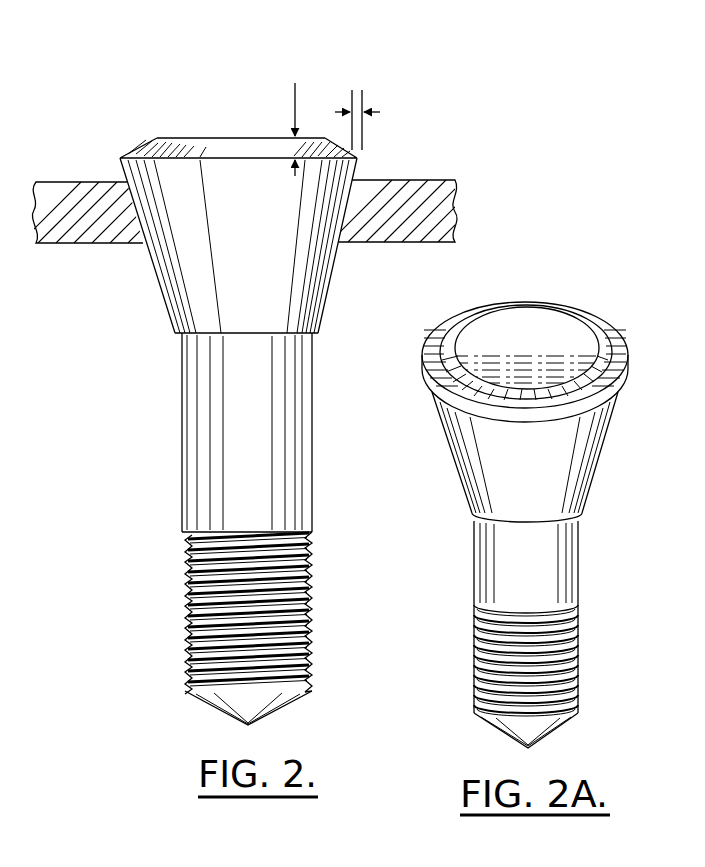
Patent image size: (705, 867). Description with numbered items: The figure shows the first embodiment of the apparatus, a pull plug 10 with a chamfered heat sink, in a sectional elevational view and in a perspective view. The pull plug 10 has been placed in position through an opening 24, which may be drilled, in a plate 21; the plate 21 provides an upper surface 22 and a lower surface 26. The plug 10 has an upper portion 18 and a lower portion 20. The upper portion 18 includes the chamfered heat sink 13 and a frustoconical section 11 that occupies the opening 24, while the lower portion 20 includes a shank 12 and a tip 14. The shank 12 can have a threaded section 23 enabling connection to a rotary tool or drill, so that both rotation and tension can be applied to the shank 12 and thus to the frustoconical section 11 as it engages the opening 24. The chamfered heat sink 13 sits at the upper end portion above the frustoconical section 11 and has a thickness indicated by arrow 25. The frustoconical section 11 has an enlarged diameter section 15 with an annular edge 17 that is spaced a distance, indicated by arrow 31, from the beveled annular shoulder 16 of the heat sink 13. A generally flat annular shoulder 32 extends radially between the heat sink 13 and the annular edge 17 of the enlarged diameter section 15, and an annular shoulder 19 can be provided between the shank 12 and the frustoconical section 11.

In FIG. 2, the pull plug 10 is at (468, 120).
In FIG. 2A, the pull plug 10 is at (616, 284).
In FIG. 2, the frustoconical section 11 is at (256, 284).
In FIG. 2A, the frustoconical section 11 is at (585, 472).
In FIG. 2, the shank 12 is at (290, 435).
In FIG. 2A, the shank 12 is at (495, 570).
In FIG. 2, the chamfered heat sink 13 is at (240, 136).
In FIG. 2A, the chamfered heat sink 13 is at (565, 330).
In FIG. 2, the tip 14 is at (210, 707).
In FIG. 2A, the tip 14 is at (505, 735).
In FIG. 2, the enlarged diameter section 15 is at (360, 160).
In FIG. 2A, the enlarged diameter section 15 is at (630, 375).
In FIG. 2, the beveled annular shoulder 16 is at (210, 146).
In FIG. 2A, the beveled annular shoulder 16 is at (519, 400).
In FIG. 2, the annular edge 17 is at (254, 162).
In FIG. 2A, the annular edge 17 is at (625, 329).
In FIG. 2, the upper portion 18 is at (126, 152).
In FIG. 2, the annular shoulder 19 is at (182, 345).
In FIG. 2, the lower portion 20 is at (302, 690).
In FIG. 2, the plate 21 is at (457, 213).
In FIG. 2, the upper surface 22 is at (66, 181).
In FIG. 2, the threaded section 23 is at (185, 648).
In FIG. 2A, the threaded section 23 is at (580, 640).
In FIG. 2, the opening 24 is at (141, 247).
In FIG. 2, the arrow indicating heat sink thickness 25 is at (296, 98).
In FIG. 2, the lower surface 26 is at (45, 244).
In FIG. 2, the arrow indicating spacing distance 31 is at (378, 110).
In FIG. 2, the flat annular shoulder 32 is at (356, 152).
In FIG. 2A, the flat annular shoulder 32 is at (475, 312).